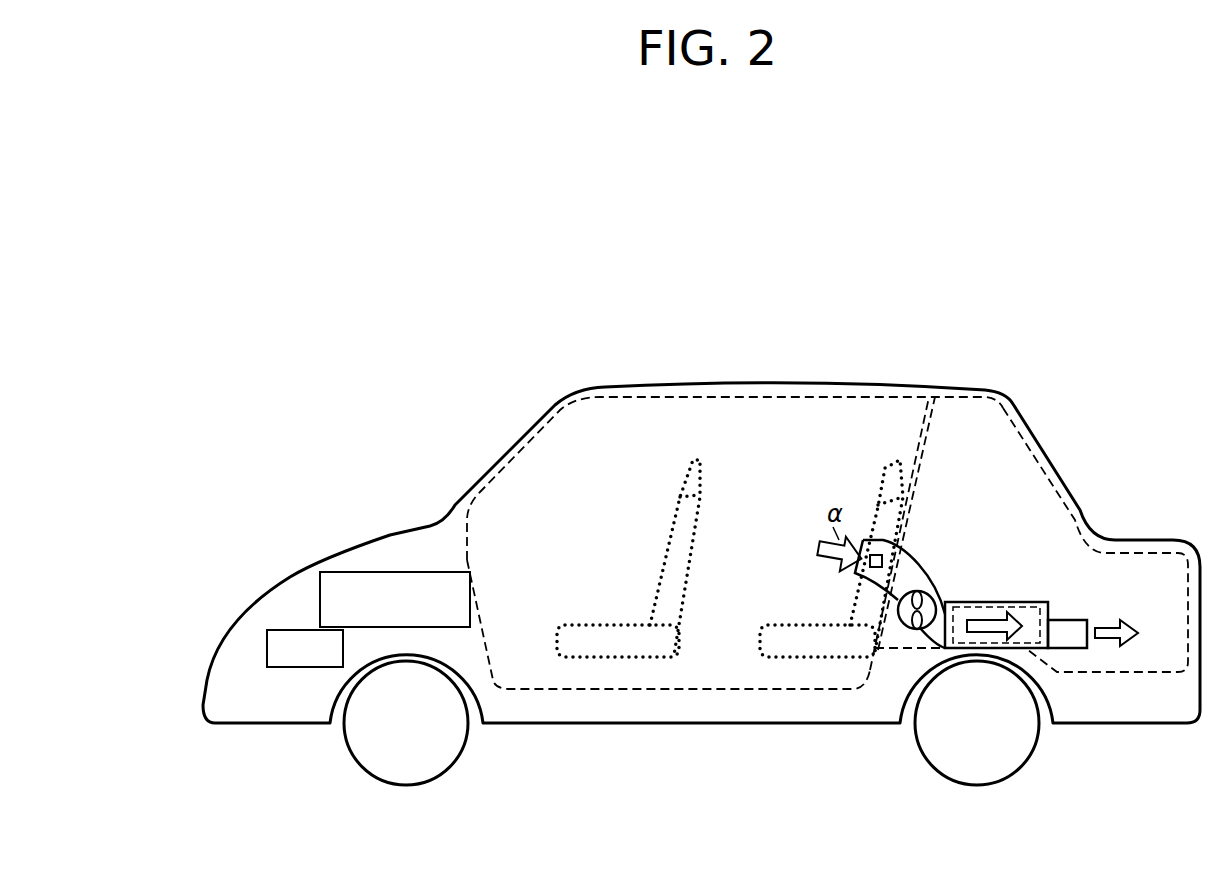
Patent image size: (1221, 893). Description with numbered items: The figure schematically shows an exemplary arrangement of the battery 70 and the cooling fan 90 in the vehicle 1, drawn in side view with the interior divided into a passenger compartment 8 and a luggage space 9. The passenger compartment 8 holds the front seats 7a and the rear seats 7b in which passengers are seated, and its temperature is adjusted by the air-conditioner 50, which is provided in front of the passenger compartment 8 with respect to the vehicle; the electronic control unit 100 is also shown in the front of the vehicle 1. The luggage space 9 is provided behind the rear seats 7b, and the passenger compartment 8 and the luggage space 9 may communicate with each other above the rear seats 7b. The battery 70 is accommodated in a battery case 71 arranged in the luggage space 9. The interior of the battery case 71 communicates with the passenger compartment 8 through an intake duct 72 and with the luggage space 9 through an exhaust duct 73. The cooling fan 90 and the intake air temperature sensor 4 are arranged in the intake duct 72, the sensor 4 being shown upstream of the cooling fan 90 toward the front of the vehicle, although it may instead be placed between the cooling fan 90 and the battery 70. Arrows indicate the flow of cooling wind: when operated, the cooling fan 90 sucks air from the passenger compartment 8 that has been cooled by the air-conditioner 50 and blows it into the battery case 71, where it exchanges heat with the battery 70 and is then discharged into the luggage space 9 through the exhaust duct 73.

The vehicle 1 is at (730, 188).
The intake air temperature sensor 4 is at (863, 578).
The front seats 7a is at (688, 463).
The rear seats 7b is at (892, 462).
The passenger compartment 8 is at (790, 465).
The luggage space 9 is at (992, 415).
The air-conditioner 50 is at (430, 572).
The battery 70 is at (963, 607).
The battery case 71 is at (1028, 598).
The intake duct 72 is at (882, 538).
The exhaust duct 73 is at (1063, 620).
The cooling fan 90 is at (942, 594).
The electronic control unit 100 is at (267, 643).